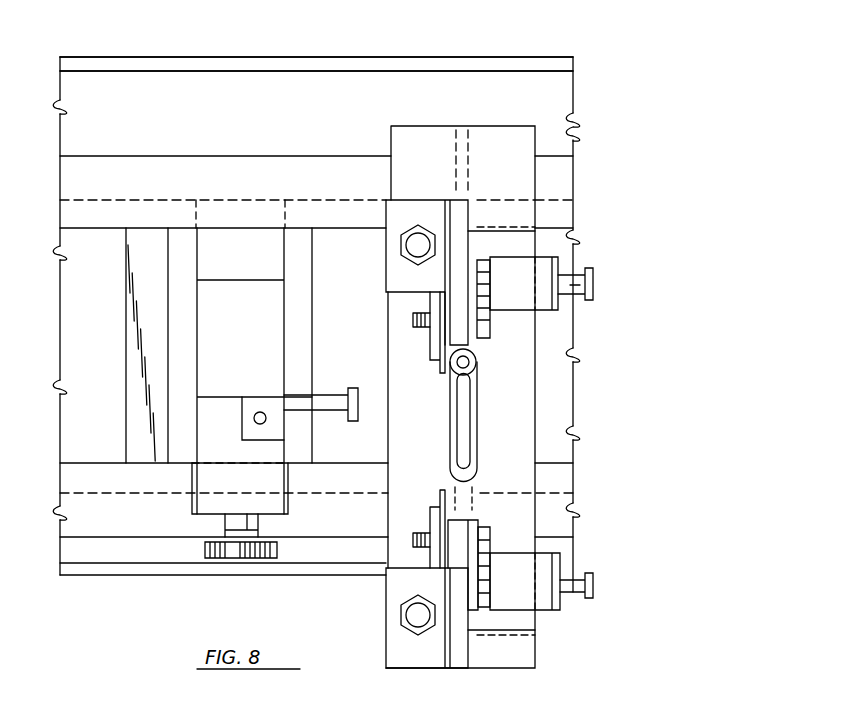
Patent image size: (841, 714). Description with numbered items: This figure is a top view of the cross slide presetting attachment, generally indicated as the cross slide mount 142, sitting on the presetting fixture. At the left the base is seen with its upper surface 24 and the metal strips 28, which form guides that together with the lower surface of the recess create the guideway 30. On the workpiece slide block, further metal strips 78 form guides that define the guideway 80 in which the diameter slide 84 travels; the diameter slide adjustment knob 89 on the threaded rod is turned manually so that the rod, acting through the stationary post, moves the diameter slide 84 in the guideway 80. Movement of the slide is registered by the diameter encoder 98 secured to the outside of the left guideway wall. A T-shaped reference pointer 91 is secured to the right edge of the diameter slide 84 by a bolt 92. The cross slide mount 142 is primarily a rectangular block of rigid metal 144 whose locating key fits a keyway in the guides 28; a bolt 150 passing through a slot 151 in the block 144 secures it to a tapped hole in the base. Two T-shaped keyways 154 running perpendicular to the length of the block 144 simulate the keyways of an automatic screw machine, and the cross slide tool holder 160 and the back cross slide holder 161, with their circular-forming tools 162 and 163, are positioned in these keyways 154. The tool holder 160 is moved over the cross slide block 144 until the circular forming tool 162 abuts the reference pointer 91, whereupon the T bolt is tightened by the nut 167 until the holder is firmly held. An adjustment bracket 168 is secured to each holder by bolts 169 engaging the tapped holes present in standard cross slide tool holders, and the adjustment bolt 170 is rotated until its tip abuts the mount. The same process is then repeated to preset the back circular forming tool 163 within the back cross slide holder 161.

The cross slide mount attachment 142 is at (325, 22).
The upper surface 24 is at (194, 120).
The metal strips 28 is at (186, 187).
The metal strips 78 is at (178, 233).
The guideway 80 is at (252, 262).
The guideway 30 is at (361, 322).
The diameter encoder 98 is at (130, 361).
The bolt 92 is at (262, 411).
The T-shaped reference pointer 91 is at (330, 393).
The diameter slide 84 is at (188, 524).
The knurled knob 89 is at (236, 560).
The rectangular block 144 is at (524, 422).
The back cross slide holder 161 is at (426, 221).
The cross slide tool holder 160 is at (420, 590).
The nut 167 is at (410, 246).
The back circular forming tool 163 is at (442, 361).
The circular forming tool 162 is at (440, 490).
The bolt 150 is at (472, 362).
The slot 151 is at (474, 466).
The bolts 169 is at (488, 290).
The adjustment bracket 168 is at (540, 302).
The T-shaped keyways 154 is at (520, 248).
The adjustment bolt 170 is at (593, 284).